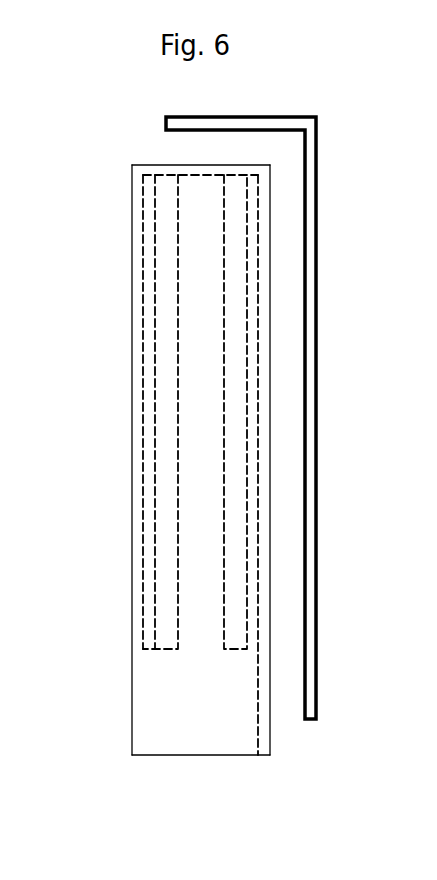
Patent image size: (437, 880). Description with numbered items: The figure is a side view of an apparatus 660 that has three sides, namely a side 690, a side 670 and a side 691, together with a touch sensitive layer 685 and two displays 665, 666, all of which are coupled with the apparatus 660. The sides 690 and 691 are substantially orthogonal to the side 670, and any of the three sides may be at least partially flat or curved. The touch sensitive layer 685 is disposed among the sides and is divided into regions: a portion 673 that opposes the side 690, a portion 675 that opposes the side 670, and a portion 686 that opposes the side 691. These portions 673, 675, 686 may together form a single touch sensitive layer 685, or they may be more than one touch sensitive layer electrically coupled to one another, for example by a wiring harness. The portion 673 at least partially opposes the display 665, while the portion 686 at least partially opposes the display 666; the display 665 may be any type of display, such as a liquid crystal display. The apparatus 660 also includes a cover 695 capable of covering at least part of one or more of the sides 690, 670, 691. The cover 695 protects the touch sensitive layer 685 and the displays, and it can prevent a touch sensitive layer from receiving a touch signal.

The apparatus 660 is at (102, 170).
The side 670 is at (146, 153).
The portion 675 is at (206, 172).
The portion 673 is at (134, 277).
The touch sensitive layer 685 is at (136, 372).
The side 690 is at (123, 472).
The display 665 is at (162, 653).
The display 666 is at (228, 659).
The portion 686 is at (268, 681).
The side 691 is at (281, 743).
The cover 695 is at (328, 322).